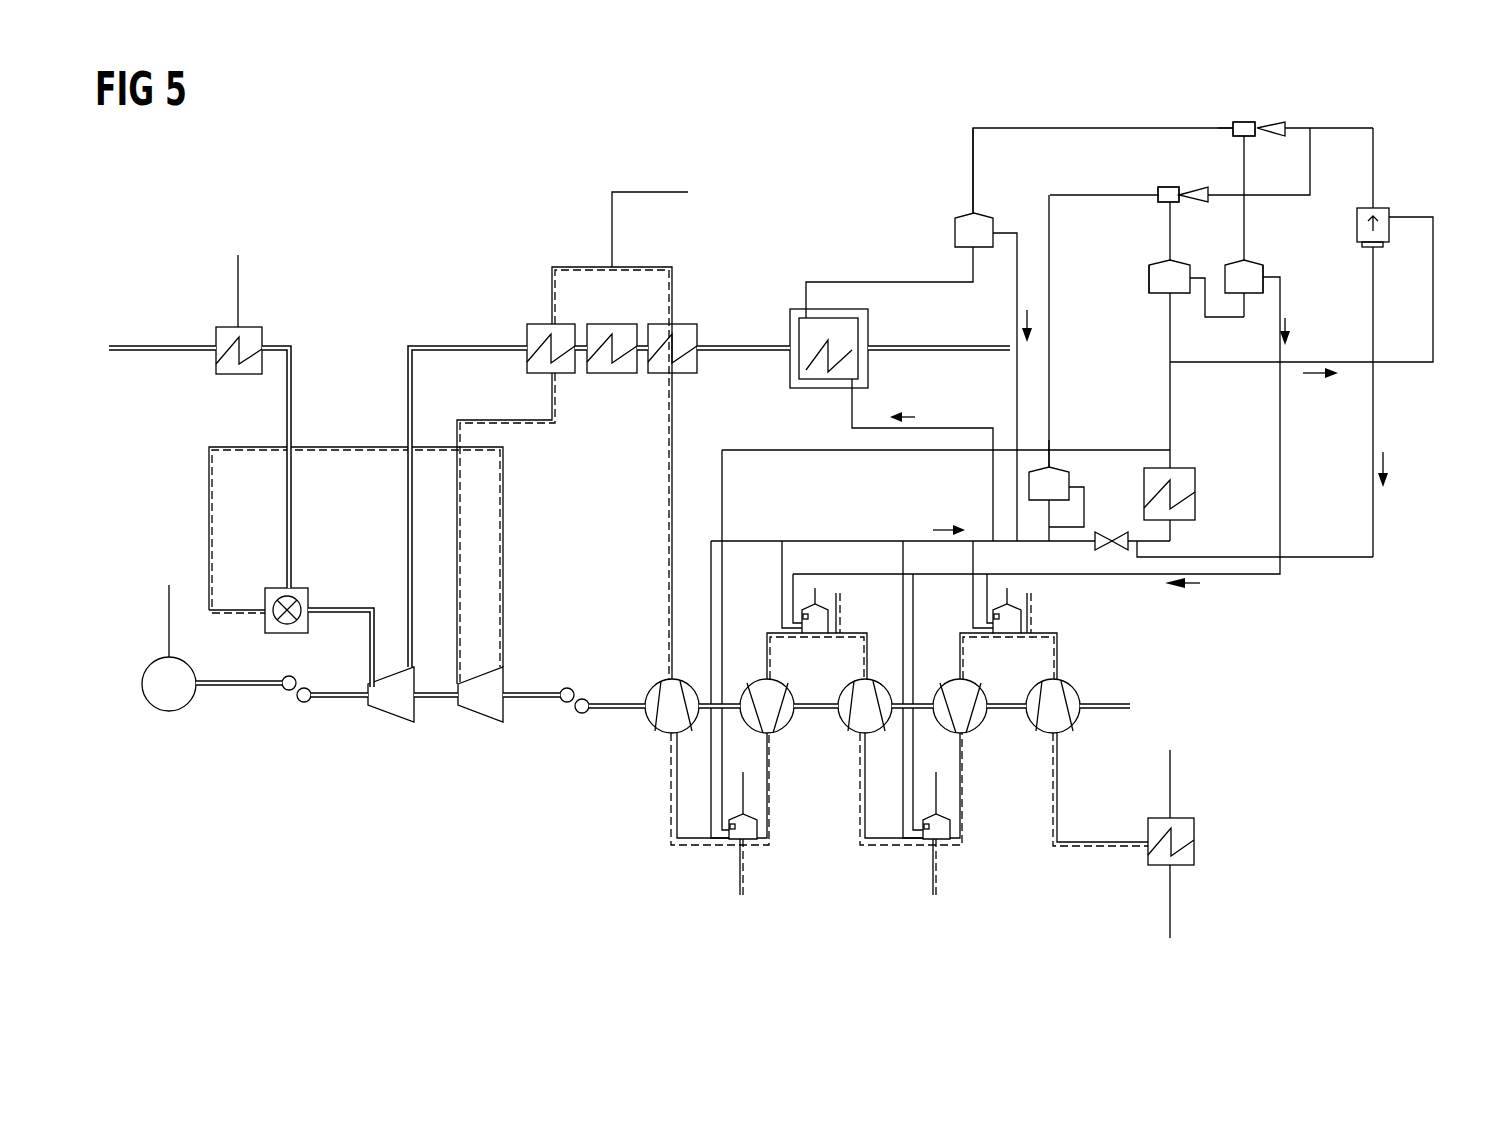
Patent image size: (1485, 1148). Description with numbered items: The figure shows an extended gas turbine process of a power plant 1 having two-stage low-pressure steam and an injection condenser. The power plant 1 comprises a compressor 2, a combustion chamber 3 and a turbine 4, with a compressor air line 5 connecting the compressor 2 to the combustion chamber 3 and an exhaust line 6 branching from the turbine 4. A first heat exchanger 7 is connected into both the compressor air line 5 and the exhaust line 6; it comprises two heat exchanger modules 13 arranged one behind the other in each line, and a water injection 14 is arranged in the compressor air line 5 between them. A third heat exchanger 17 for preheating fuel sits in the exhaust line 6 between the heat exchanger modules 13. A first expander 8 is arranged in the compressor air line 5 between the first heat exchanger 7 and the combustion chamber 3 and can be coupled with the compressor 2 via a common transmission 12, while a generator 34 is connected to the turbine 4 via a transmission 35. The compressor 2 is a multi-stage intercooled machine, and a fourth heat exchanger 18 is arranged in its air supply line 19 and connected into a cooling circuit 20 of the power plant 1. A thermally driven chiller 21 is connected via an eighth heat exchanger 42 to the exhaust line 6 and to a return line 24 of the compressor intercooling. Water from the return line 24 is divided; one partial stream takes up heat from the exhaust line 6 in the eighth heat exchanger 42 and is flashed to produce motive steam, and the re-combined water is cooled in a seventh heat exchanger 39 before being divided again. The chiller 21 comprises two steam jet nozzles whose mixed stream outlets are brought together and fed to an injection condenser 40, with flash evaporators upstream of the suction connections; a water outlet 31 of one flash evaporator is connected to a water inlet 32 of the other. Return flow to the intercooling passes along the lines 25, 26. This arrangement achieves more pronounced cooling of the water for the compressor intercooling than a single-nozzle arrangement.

The power plant 1 is at (735, 124).
The compressor 2 is at (1072, 885).
The combustion chamber 3 is at (298, 588).
The turbine 4 is at (393, 723).
The compressor air line 5 is at (345, 445).
The exhaust line 6 is at (455, 346).
The first heat exchanger 7 is at (690, 323).
The first expander 8 is at (483, 723).
The common transmission 12 is at (567, 713).
The heat exchanger modules 13 is at (545, 323).
The water injection 14 is at (657, 190).
The third heat exchanger 17 is at (607, 375).
The fourth heat exchanger 18 is at (1195, 848).
The air supply line 19 is at (1105, 842).
The cooling circuit 20 is at (1172, 898).
The thermally driven chiller 21 is at (1413, 149).
The return line 24 is at (915, 540).
The return line 25 is at (1036, 467).
The return line 26 is at (1242, 576).
The water outlet 31 is at (1192, 268).
The water inlet 32 is at (1248, 294).
The generator 34 is at (166, 712).
The transmission 35 is at (290, 702).
The seventh heat exchanger 39 is at (1195, 482).
The injection condenser 40 is at (1392, 215).
The eighth heat exchanger 42 is at (797, 318).